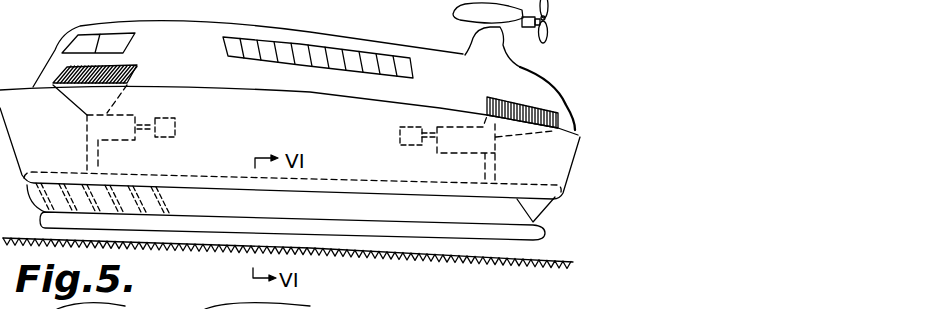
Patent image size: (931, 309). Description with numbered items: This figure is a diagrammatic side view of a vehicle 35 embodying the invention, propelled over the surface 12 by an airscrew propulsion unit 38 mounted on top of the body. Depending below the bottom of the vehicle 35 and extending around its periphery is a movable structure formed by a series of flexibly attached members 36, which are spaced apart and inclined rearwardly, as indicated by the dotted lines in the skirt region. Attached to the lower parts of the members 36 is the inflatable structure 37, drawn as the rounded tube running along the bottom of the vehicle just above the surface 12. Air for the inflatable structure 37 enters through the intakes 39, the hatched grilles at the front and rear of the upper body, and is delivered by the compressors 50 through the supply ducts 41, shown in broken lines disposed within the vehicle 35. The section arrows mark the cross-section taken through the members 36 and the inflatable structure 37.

The surface 12 is at (552, 260).
The vehicle 35 is at (345, 36).
The flexibly attached members 36 is at (107, 190).
The inflatable structure 37 is at (43, 220).
The propeller power unit 38 is at (455, 15).
The intakes 39 is at (133, 68).
The supply ducts 41 is at (398, 186).
The compressors 50 is at (128, 117).